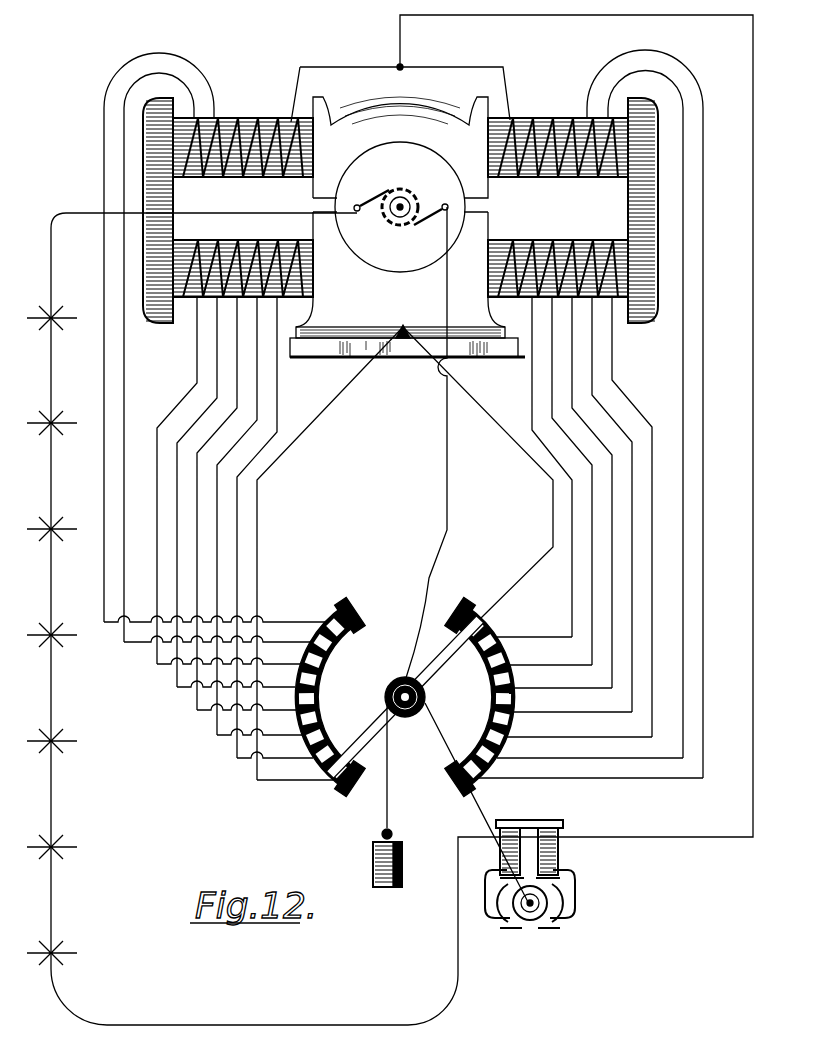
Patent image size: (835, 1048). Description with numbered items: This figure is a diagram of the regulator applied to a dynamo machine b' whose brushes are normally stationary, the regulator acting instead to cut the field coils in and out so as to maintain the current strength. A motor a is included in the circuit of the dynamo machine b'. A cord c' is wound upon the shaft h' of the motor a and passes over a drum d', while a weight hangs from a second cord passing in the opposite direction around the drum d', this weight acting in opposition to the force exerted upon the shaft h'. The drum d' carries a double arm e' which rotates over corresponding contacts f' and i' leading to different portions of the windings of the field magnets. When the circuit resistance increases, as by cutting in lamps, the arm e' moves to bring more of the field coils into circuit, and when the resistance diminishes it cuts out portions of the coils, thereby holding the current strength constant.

The dynamo machine b' is at (405, 552).
The contacts f' is at (330, 696).
The cord c' is at (480, 702).
The contacts i' is at (487, 698).
The double arm e' is at (404, 697).
The drum d' is at (405, 718).
The motor a is at (538, 893).
The shaft h' is at (533, 926).